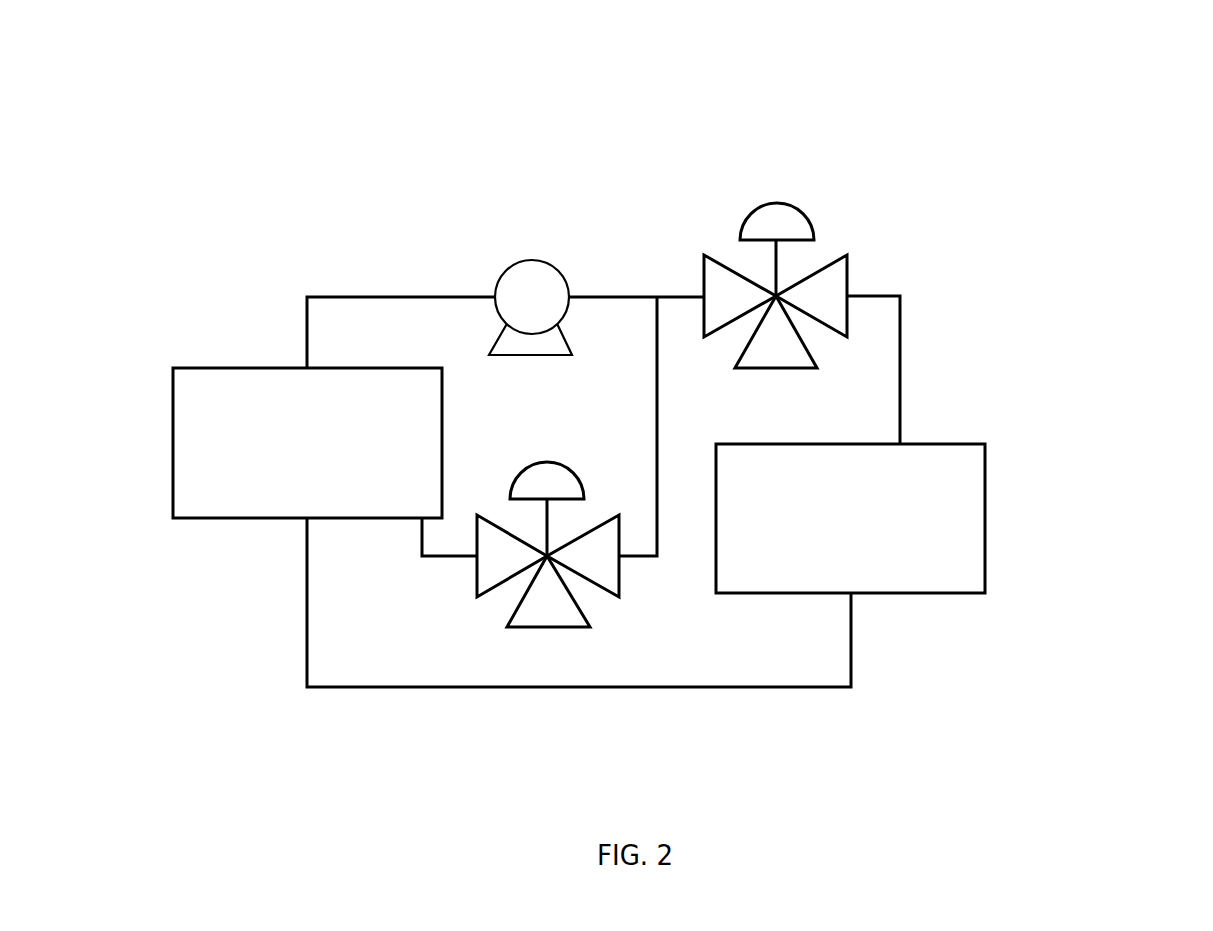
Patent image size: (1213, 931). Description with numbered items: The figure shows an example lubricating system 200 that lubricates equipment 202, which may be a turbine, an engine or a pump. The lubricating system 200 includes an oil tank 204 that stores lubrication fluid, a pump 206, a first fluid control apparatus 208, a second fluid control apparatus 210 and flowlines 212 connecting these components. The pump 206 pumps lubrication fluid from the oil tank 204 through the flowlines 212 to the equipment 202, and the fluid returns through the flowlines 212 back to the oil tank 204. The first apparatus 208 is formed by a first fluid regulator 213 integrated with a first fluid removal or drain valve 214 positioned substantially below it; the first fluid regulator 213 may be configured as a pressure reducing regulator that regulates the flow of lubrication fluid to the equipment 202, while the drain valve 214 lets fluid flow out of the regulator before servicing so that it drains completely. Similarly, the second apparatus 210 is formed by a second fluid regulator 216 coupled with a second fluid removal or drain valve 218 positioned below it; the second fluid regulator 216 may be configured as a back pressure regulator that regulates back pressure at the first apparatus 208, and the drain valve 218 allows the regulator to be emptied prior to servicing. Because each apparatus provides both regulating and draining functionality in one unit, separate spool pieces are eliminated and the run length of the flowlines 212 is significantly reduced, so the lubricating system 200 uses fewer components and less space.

The lubricating system 200 is at (1112, 103).
The equipment 202 is at (985, 516).
The oil tank 204 is at (173, 440).
The pump 206 is at (533, 261).
The first fluid control apparatus 208 is at (853, 213).
The second fluid control apparatus 210 is at (548, 410).
The flowlines 212 is at (851, 684).
The first fluid regulator 213 is at (775, 204).
The first fluid removal or drain valve 214 is at (773, 368).
The second fluid regulator 216 is at (544, 464).
The second fluid removal or drain valve 218 is at (547, 627).